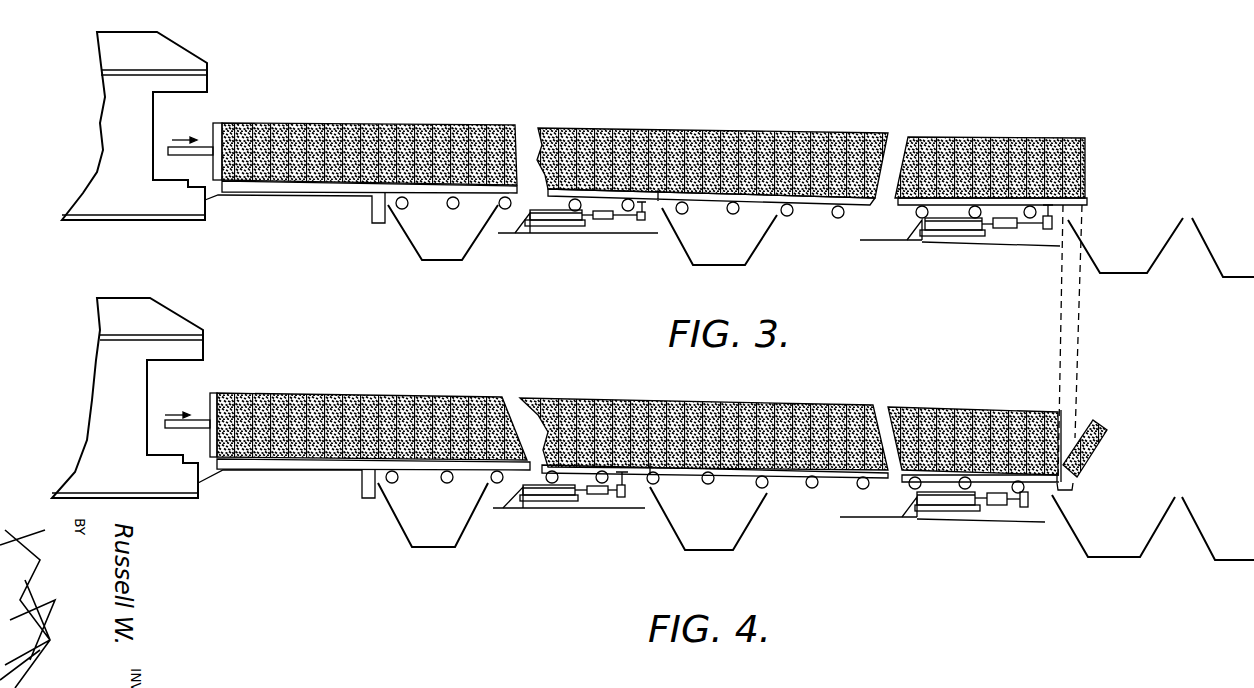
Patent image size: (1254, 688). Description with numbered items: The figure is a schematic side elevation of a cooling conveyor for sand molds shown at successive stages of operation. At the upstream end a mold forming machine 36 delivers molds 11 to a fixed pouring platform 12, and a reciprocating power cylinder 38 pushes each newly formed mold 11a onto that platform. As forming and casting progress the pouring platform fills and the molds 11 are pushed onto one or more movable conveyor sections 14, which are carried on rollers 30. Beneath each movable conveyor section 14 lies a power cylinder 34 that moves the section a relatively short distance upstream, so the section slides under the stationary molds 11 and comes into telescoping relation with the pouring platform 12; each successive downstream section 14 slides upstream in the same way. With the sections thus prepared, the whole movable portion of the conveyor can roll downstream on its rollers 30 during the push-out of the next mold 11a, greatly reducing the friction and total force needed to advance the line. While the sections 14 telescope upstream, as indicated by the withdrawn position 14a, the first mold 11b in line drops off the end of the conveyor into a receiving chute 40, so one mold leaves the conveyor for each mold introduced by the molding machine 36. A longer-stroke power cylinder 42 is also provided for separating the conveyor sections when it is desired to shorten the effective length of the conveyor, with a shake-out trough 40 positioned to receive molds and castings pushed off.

In FIG. 3, the molds 11 is at (985, 133).
In FIG. 4, the molds 11 is at (645, 402).
In FIG. 3, the newly formed mold 11a is at (232, 122).
In FIG. 4, the newly formed mold 11a is at (232, 395).
In FIG. 4, the first mold in line 11b is at (1100, 425).
In FIG. 3, the pouring platform 12 is at (275, 196).
In FIG. 4, the pouring platform 12 is at (268, 472).
In FIG. 3, the movable conveyor sections 14 is at (1007, 205).
In FIG. 3, the conveyor withdrawal 14a is at (1072, 336).
In FIG. 4, the conveyor withdrawal 14a is at (1068, 495).
In FIG. 3, the rollers 30 is at (838, 216).
In FIG. 4, the rollers 30 is at (447, 483).
In FIG. 3, the power cylinders 34 is at (1012, 229).
In FIG. 4, the power cylinders 34 is at (1005, 507).
In FIG. 3, the mold forming machine 36 is at (208, 80).
In FIG. 4, the mold forming machine 36 is at (207, 352).
In FIG. 3, the reciprocating power cylinder 38 is at (213, 140).
In FIG. 4, the reciprocating power cylinder 38 is at (207, 398).
In FIG. 3, the receiving chute 40 is at (1137, 273).
In FIG. 4, the receiving chute 40 is at (1125, 557).
In FIG. 3, the power cylinder 42 is at (950, 231).
In FIG. 4, the power cylinder 42 is at (940, 505).